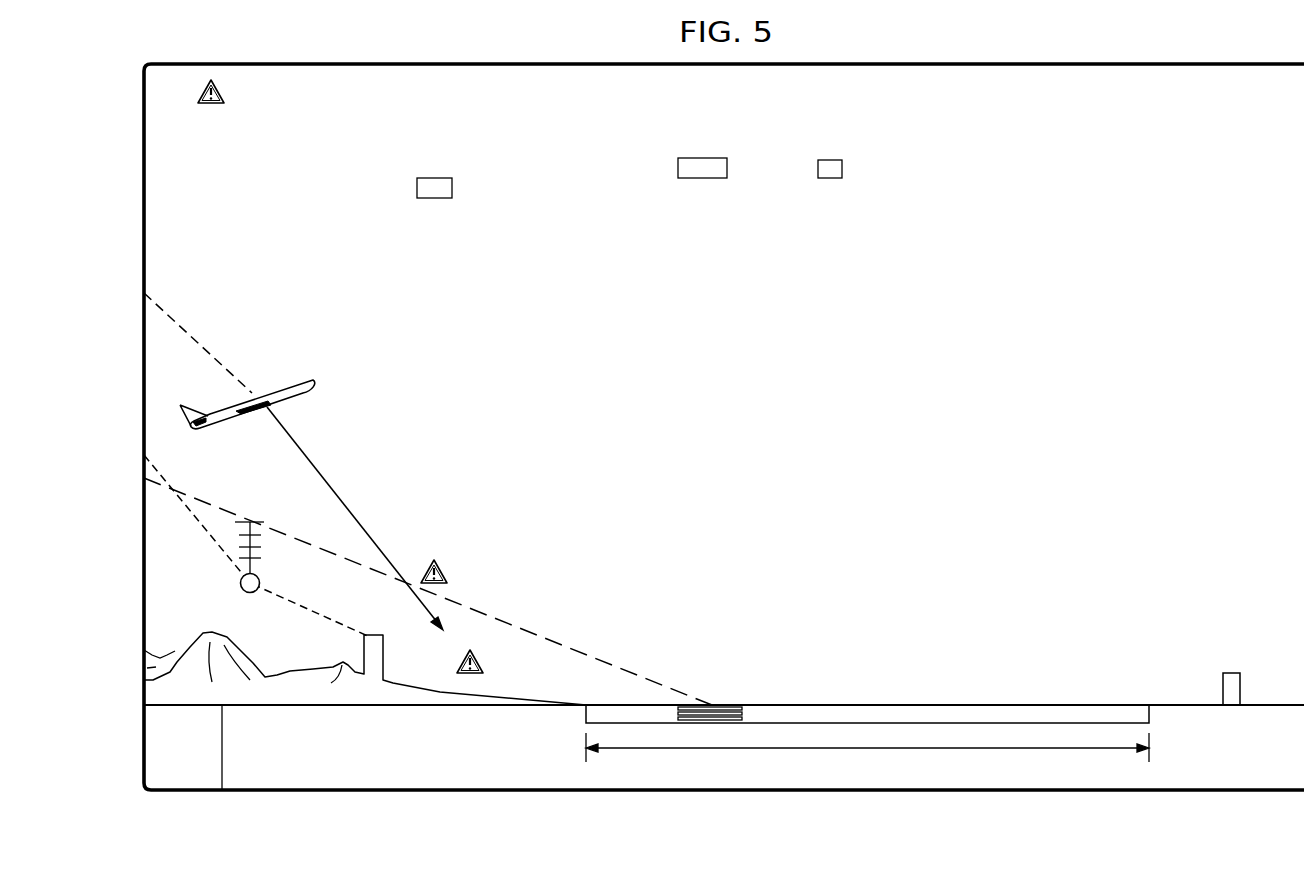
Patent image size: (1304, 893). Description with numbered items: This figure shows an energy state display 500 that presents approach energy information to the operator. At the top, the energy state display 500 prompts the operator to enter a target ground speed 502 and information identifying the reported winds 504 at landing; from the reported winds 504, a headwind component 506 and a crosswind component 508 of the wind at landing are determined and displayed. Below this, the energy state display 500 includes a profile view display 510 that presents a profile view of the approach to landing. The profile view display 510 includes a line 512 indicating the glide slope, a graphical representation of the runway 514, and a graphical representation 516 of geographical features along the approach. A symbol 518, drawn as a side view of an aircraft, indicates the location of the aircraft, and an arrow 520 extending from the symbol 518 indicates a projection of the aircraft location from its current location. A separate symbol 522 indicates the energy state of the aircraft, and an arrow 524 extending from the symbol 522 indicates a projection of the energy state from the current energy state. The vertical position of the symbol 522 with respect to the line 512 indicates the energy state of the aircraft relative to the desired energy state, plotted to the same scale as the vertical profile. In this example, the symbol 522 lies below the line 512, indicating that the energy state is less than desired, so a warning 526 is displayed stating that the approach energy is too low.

The energy state display 500 is at (1178, 58).
The target ground speed 502 is at (480, 194).
The reported winds 504 is at (747, 148).
The headwind component 506 is at (833, 198).
The crosswind component 508 is at (890, 223).
The profile view display 510 is at (742, 323).
The line indicating glide slope 512 is at (508, 626).
The runway 514 is at (867, 703).
The graphical representation of geographical features 516 is at (255, 662).
The symbol 518 is at (280, 378).
The arrow 520 is at (377, 509).
The symbol 522 is at (241, 587).
The arrow 524 is at (342, 604).
The warning 526 is at (440, 103).